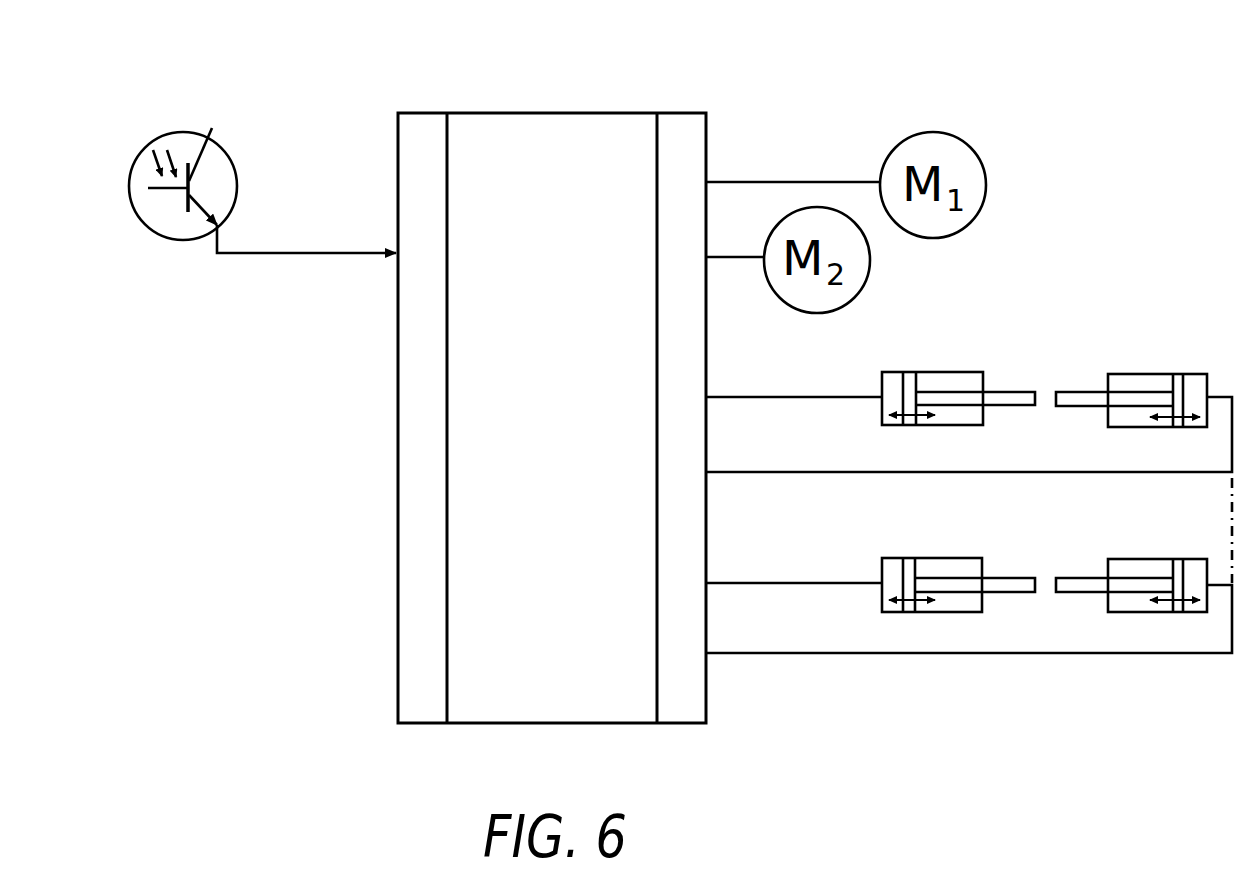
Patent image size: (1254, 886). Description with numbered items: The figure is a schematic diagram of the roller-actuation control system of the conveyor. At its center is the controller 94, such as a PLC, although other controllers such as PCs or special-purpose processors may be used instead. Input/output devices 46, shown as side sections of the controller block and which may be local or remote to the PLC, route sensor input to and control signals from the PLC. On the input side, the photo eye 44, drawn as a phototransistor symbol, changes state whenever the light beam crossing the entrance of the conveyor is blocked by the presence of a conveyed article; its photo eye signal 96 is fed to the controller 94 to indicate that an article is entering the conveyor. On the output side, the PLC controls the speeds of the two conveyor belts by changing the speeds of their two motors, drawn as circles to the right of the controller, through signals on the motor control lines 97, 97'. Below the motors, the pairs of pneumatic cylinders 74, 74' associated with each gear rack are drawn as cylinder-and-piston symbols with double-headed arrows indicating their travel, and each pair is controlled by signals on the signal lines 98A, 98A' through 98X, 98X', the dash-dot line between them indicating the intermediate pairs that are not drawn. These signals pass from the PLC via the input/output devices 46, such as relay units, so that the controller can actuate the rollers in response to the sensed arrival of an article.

The photo eye 44 is at (192, 131).
The photo eye signal 96 is at (313, 258).
The controller 94 is at (523, 132).
The input/output devices 46 is at (420, 710).
The motor control line 97 is at (793, 142).
The motor control line 97' is at (743, 222).
The signal line 98A is at (794, 363).
The signal line 98A' is at (969, 434).
The pneumatic cylinder 74 is at (958, 365).
The pneumatic cylinder 74' is at (1131, 366).
The signal line 98X is at (794, 549).
The signal line 98X' is at (969, 619).